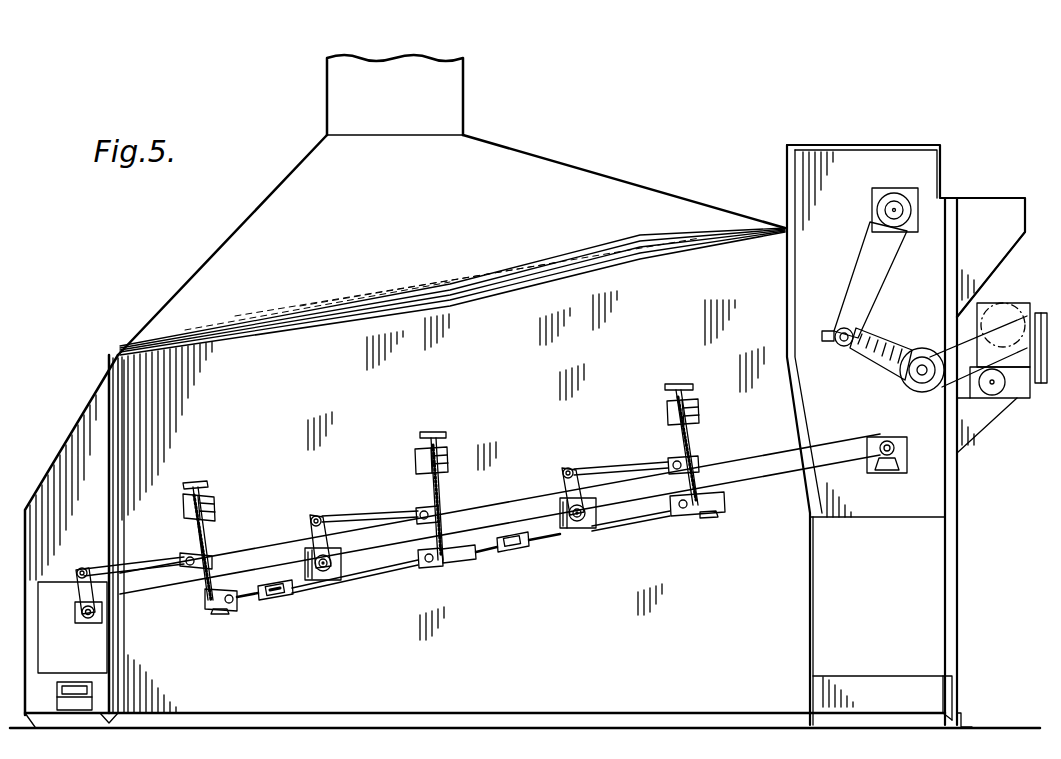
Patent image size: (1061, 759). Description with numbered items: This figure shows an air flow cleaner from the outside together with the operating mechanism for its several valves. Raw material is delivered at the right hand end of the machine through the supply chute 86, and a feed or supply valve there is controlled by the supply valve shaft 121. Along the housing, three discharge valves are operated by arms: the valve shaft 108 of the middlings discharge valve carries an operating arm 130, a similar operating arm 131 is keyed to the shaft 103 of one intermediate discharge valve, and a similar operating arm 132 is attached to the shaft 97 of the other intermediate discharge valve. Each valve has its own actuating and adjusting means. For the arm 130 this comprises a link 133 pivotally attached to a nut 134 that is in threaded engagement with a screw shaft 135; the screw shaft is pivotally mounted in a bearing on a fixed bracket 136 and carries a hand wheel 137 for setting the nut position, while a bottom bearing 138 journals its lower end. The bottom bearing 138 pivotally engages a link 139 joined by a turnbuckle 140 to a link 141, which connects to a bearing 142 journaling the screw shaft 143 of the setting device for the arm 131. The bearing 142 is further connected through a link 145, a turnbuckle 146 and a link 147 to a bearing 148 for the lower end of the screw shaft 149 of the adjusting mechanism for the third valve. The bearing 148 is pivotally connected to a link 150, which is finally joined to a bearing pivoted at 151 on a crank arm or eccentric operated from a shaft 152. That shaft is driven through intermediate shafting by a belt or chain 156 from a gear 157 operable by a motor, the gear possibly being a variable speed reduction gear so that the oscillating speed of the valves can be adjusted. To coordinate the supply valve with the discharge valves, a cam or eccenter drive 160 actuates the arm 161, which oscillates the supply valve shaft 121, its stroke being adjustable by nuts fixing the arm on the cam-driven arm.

The supply chute 86 is at (980, 210).
The valve shaft 97 is at (585, 522).
The valve shaft 103 is at (323, 572).
The valve shaft 108 is at (88, 620).
The supply valve shaft 121 is at (893, 206).
The operating arm 130 is at (76, 583).
The operating arm 131 is at (325, 521).
The operating arm 132 is at (565, 470).
The link 133 is at (142, 570).
The nut 134 is at (222, 560).
The screw shaft 135 is at (212, 542).
The fixed bracket 136 is at (218, 506).
The hand wheel 137 is at (200, 482).
The bottom bearing 138 is at (206, 606).
The link 139 is at (248, 603).
The turnbuckle 140 is at (293, 600).
The link 141 is at (380, 572).
The bearing 142 is at (436, 565).
The screw shaft 143 is at (444, 486).
The link 145 is at (478, 556).
The turnbuckle 146 is at (520, 546).
The link 147 is at (628, 520).
The bearing 148 is at (690, 512).
The screw shaft 149 is at (700, 432).
The link 150 is at (776, 486).
The pivot 151 is at (892, 442).
The shaft 152 is at (886, 466).
The belt or chain 156 is at (968, 331).
The gear 157 is at (1001, 306).
The cam or eccenter drive 160 is at (904, 376).
The arm 161 is at (862, 276).